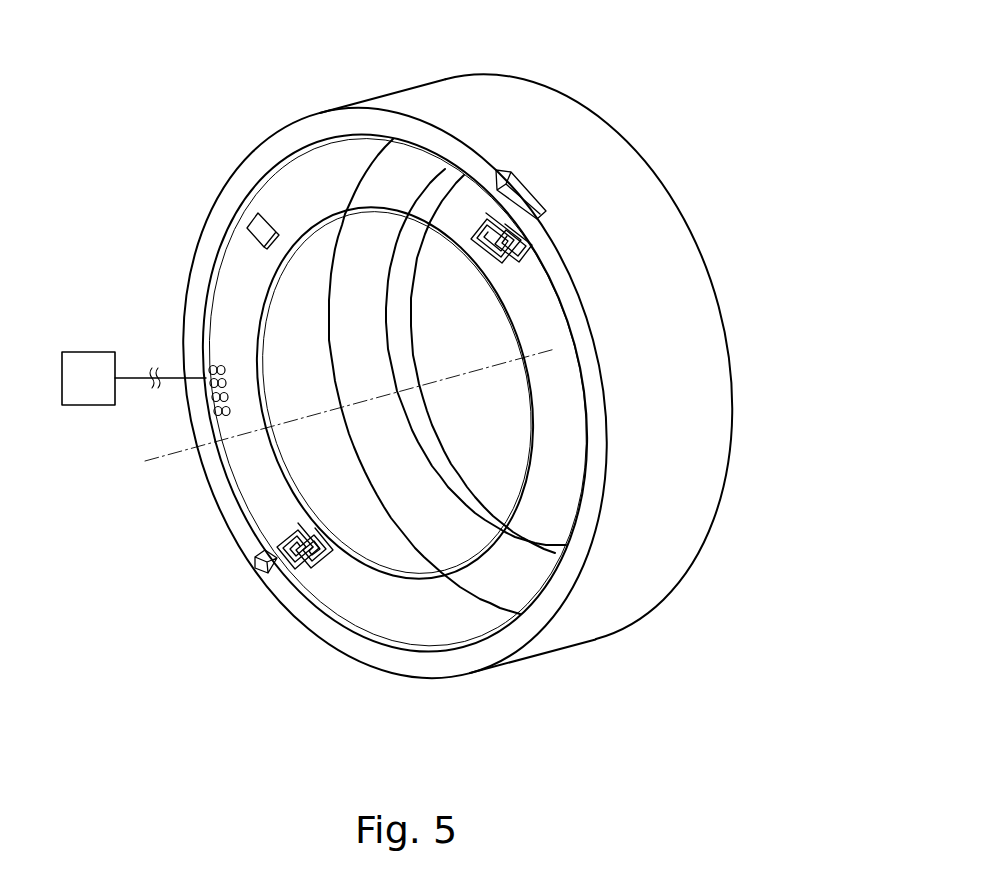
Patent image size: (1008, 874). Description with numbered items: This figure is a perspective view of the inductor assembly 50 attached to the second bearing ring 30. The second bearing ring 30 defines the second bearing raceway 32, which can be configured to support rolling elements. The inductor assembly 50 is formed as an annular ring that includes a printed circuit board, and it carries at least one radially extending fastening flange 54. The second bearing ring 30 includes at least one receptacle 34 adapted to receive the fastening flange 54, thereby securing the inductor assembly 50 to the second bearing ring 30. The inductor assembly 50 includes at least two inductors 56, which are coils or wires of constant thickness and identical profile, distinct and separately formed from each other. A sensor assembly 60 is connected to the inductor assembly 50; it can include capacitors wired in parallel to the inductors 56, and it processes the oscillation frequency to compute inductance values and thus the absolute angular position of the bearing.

The second bearing ring 30 is at (448, 393).
The second bearing raceway 32 is at (424, 320).
The receptacle 34 is at (394, 427).
The inductor assembly 50 is at (395, 457).
The radially extending fastening flange 54 is at (399, 336).
The inductor 56 is at (429, 334).
The sensor assembly 60 is at (88, 361).